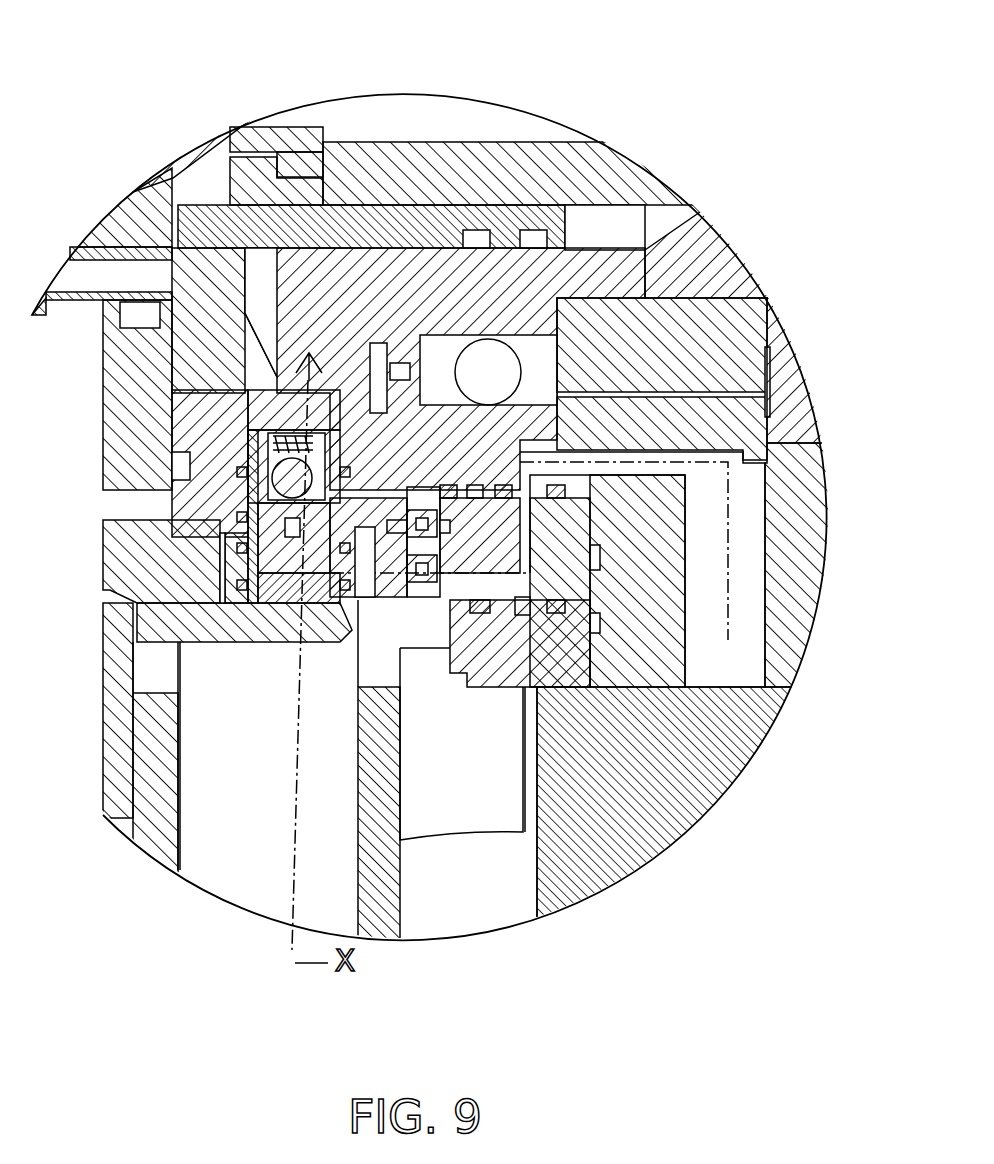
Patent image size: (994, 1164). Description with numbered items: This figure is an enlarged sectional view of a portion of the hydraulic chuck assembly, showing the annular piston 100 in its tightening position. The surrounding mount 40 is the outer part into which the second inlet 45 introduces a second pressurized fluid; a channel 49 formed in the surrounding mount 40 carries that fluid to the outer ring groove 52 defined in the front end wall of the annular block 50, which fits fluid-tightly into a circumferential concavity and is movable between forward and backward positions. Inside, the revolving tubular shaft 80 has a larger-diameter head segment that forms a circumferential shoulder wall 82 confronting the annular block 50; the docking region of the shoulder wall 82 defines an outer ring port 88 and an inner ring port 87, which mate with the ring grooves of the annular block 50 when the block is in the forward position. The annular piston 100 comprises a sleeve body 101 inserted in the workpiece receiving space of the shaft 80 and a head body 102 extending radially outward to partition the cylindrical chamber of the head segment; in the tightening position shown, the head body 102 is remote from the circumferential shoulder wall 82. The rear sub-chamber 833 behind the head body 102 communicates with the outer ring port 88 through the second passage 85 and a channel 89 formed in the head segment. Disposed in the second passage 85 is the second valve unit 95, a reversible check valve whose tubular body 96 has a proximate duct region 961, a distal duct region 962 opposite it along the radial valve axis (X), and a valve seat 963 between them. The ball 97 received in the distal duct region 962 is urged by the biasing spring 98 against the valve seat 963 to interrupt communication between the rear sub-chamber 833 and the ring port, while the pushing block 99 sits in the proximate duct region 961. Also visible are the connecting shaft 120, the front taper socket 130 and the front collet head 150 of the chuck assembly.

The surrounding mount 40 is at (835, 478).
The second inlet 45 is at (735, 670).
The channel 49 is at (643, 468).
The annular block 50 is at (541, 624).
The outer ring groove 52 is at (500, 578).
The revolving tubular shaft 80 is at (420, 236).
The circumferential shoulder wall 82 is at (292, 268).
The second passage 85 is at (192, 497).
The inner ring port 87 is at (643, 367).
The outer ring port 88 is at (405, 655).
The channel 89 is at (240, 390).
The second reversible check valve 95 is at (270, 610).
The tubular body 96 is at (140, 578).
The ball 97 is at (277, 475).
The biasing spring 98 is at (248, 445).
The pushing block 99 is at (271, 616).
The annular piston 100 is at (379, 196).
The sleeve body 101 is at (343, 368).
The head body 102 is at (200, 270).
The connecting shaft 120 is at (500, 147).
The front taper socket 130 is at (143, 197).
The front collet head 150 is at (170, 172).
The rear sub-chamber 833 is at (293, 157).
The proximate duct region 961 is at (280, 595).
The distal duct region 962 is at (303, 413).
The valve seat 963 is at (200, 513).